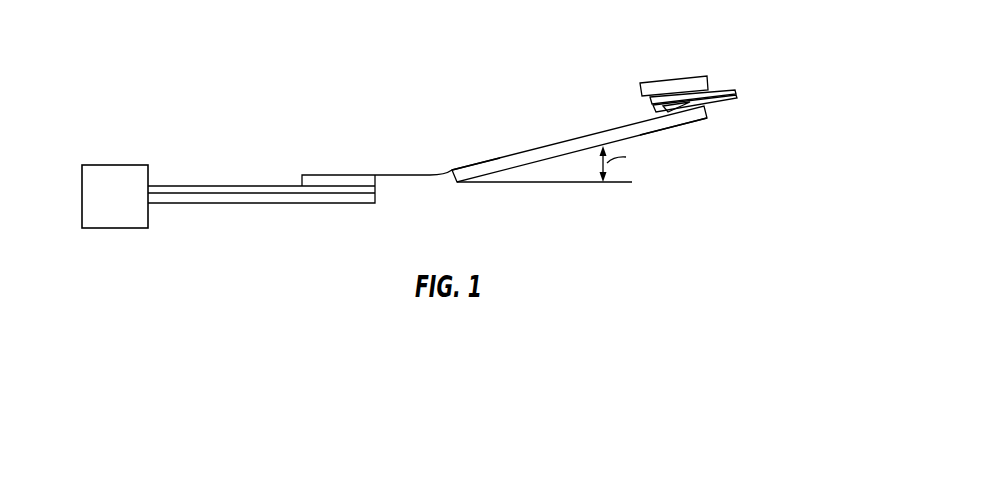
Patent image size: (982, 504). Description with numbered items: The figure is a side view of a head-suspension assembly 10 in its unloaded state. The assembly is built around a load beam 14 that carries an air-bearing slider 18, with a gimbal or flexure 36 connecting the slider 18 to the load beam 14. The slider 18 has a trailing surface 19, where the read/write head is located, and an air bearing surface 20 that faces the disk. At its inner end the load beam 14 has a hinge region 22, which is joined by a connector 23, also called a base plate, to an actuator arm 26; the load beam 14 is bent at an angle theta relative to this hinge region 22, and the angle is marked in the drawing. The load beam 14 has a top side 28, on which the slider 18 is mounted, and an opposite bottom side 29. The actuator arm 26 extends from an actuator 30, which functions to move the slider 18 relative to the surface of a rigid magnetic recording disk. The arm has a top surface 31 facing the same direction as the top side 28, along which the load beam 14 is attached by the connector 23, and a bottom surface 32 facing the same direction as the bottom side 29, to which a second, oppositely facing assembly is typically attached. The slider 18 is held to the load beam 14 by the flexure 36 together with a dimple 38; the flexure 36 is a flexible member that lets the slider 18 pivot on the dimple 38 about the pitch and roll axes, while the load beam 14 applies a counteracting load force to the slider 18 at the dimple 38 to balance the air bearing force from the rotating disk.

The head-suspension assembly 10 is at (477, 110).
The load beam 14 is at (568, 141).
The air-bearing slider 18 is at (709, 79).
The trailing surface 19 is at (719, 86).
The air bearing surface 20 is at (669, 79).
The hinge region 22 is at (398, 176).
The connector 23 is at (332, 175).
The actuator arm 26 is at (203, 204).
The top side 28 is at (473, 165).
The bottom side 29 is at (672, 128).
The actuator 30 is at (113, 165).
The top surface 31 is at (248, 186).
The bottom surface 32 is at (268, 204).
The flexure 36 is at (716, 104).
The dimple 38 is at (655, 104).